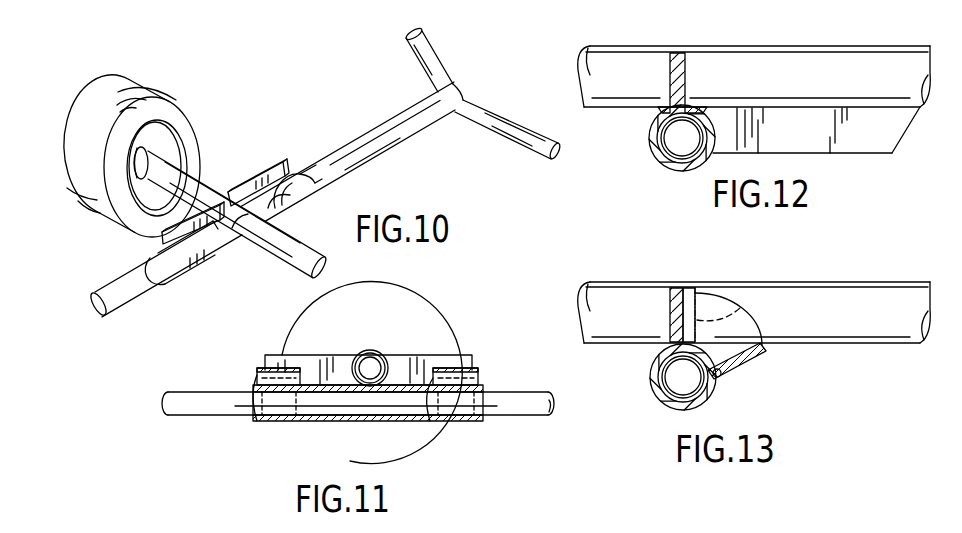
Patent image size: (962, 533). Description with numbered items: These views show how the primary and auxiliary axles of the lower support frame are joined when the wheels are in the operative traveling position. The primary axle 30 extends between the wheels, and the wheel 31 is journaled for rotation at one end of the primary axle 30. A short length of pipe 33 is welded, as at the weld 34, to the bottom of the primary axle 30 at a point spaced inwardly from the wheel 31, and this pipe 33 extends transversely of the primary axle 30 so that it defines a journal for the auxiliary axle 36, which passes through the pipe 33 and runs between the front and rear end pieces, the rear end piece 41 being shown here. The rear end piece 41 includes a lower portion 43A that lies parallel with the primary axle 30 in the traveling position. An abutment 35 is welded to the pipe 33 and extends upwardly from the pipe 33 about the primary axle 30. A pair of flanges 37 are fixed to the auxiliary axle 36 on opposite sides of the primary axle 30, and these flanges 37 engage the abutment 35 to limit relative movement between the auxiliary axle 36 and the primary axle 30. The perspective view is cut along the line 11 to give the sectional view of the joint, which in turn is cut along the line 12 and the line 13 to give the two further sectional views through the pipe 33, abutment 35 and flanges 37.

In FIG. 10, the section line 11— 11 is at (328, 133).
In FIG. 11, the section line 12— 12 is at (343, 400).
In FIG. 11, the section line 13— 13 is at (273, 400).
In FIG. 10, the primary axle 30 is at (195, 177).
In FIG. 11, the primary axle 30 is at (375, 352).
In FIG. 12, the primary axle 30 is at (835, 57).
In FIG. 13, the primary axle 30 is at (836, 286).
In FIG. 10, the wheel 31 is at (72, 156).
In FIG. 11, the wheel 31 is at (441, 310).
In FIG. 12, the wheel 31 is at (816, 130).
In FIG. 10, the pipe 33 is at (287, 208).
In FIG. 11, the pipe 33 is at (407, 422).
In FIG. 12, the pipe 33 is at (652, 153).
In FIG. 13, the pipe 33 is at (652, 377).
In FIG. 11, the weld 34 is at (438, 418).
In FIG. 12, the weld 34 is at (666, 110).
In FIG. 10, the abutment 35 is at (258, 173).
In FIG. 11, the abutment 35 is at (432, 355).
In FIG. 12, the abutment 35 is at (665, 53).
In FIG. 13, the abutment 35 is at (668, 288).
In FIG. 10, the auxiliary axle 36 is at (385, 125).
In FIG. 11, the auxiliary axle 36 is at (197, 416).
In FIG. 12, the auxiliary axle 36 is at (672, 160).
In FIG. 13, the auxiliary axle 36 is at (670, 395).
In FIG. 10, the flanges 37 is at (313, 177).
In FIG. 11, the flanges 37 is at (258, 380).
In FIG. 13, the flanges 37 is at (727, 311).
In FIG. 10, the rear end piece 41 is at (448, 67).
In FIG. 10, the lower portion of rear end piece 43A is at (512, 133).